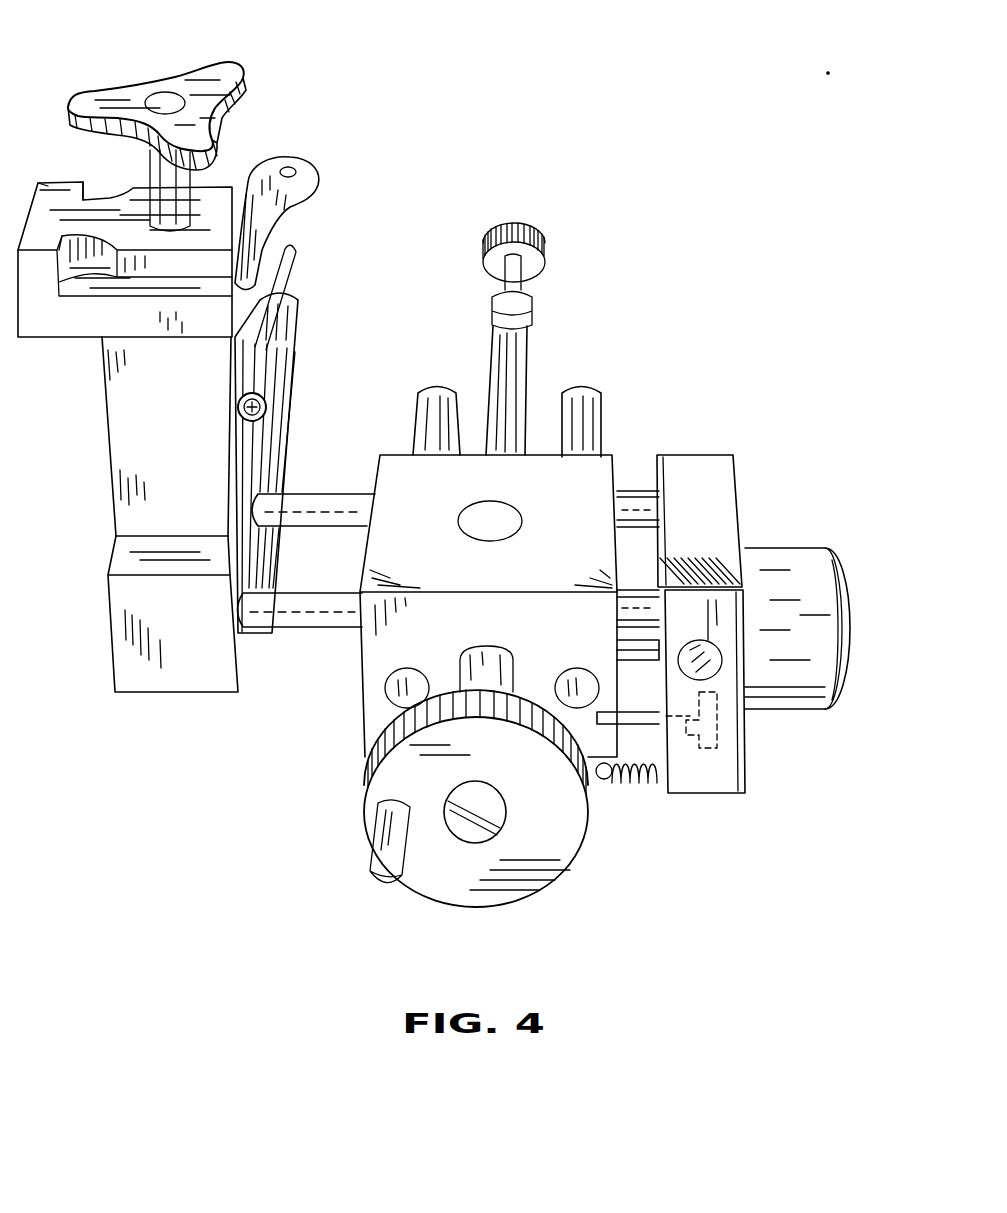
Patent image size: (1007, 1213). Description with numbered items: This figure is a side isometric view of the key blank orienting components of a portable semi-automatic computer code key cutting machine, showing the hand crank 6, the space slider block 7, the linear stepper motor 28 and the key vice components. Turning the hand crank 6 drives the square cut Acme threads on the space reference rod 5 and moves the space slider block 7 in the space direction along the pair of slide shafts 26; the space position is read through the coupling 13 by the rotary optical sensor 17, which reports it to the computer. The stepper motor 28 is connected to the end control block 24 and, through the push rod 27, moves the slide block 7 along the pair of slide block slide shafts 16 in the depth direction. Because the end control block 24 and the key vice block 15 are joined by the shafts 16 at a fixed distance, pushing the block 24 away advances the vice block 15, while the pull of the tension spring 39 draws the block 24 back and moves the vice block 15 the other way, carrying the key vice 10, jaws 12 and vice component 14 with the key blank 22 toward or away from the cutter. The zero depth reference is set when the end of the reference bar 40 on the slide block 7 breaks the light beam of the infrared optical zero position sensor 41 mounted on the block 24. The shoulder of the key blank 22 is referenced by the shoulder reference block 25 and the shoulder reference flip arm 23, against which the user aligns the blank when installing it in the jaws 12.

The space reference rod 5 is at (533, 370).
The hand crank 6 is at (563, 846).
The space slider block 7 is at (355, 705).
The key vice 10 is at (89, 345).
The jaws 12 is at (231, 187).
The coupling 13 is at (534, 300).
The key vice component 14 is at (212, 44).
The key vice block 15 is at (106, 482).
The slide block slide shafts 16 is at (318, 488).
The rotary optical sensor 17 is at (550, 228).
The key blank 22 is at (314, 162).
The shoulder reference flip arm 23 is at (292, 255).
The end control block 24 is at (729, 490).
The shoulder reference block 25 is at (310, 366).
The slide shafts 26 is at (430, 384).
The push rod 27 is at (624, 650).
The stepper motor 28 is at (810, 544).
The tension spring 39 is at (645, 787).
The reference bar 40 is at (639, 698).
The infrared optical zero position sensor 41 is at (731, 711).